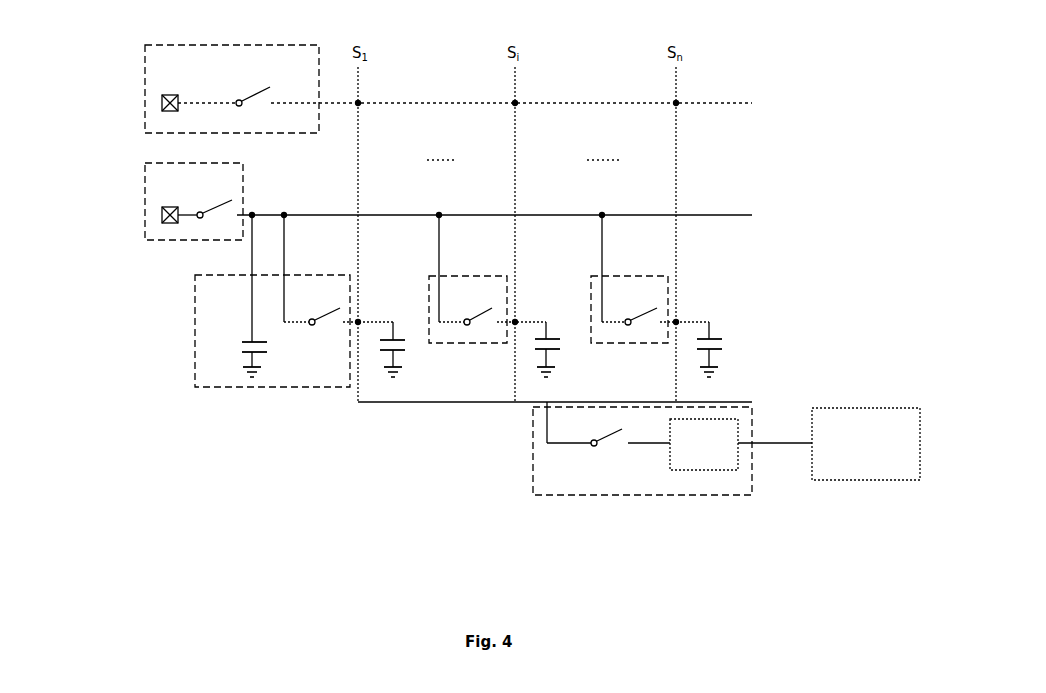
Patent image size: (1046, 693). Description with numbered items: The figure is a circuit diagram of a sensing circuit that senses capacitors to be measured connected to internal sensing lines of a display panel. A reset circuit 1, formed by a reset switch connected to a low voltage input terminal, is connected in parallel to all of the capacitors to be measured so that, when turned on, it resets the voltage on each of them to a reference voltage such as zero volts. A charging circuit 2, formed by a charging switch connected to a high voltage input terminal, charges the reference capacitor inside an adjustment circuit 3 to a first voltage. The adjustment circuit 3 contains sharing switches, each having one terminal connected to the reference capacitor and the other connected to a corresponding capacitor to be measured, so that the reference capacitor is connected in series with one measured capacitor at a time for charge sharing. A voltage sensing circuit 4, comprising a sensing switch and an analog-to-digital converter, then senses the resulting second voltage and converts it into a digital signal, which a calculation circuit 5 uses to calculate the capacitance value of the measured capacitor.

The reset circuit 1 is at (145, 85).
The charging circuit 2 is at (145, 193).
The adjustment circuit 3 is at (195, 320).
The voltage sensing circuit 4 is at (605, 495).
The calculation circuit 5 is at (865, 408).